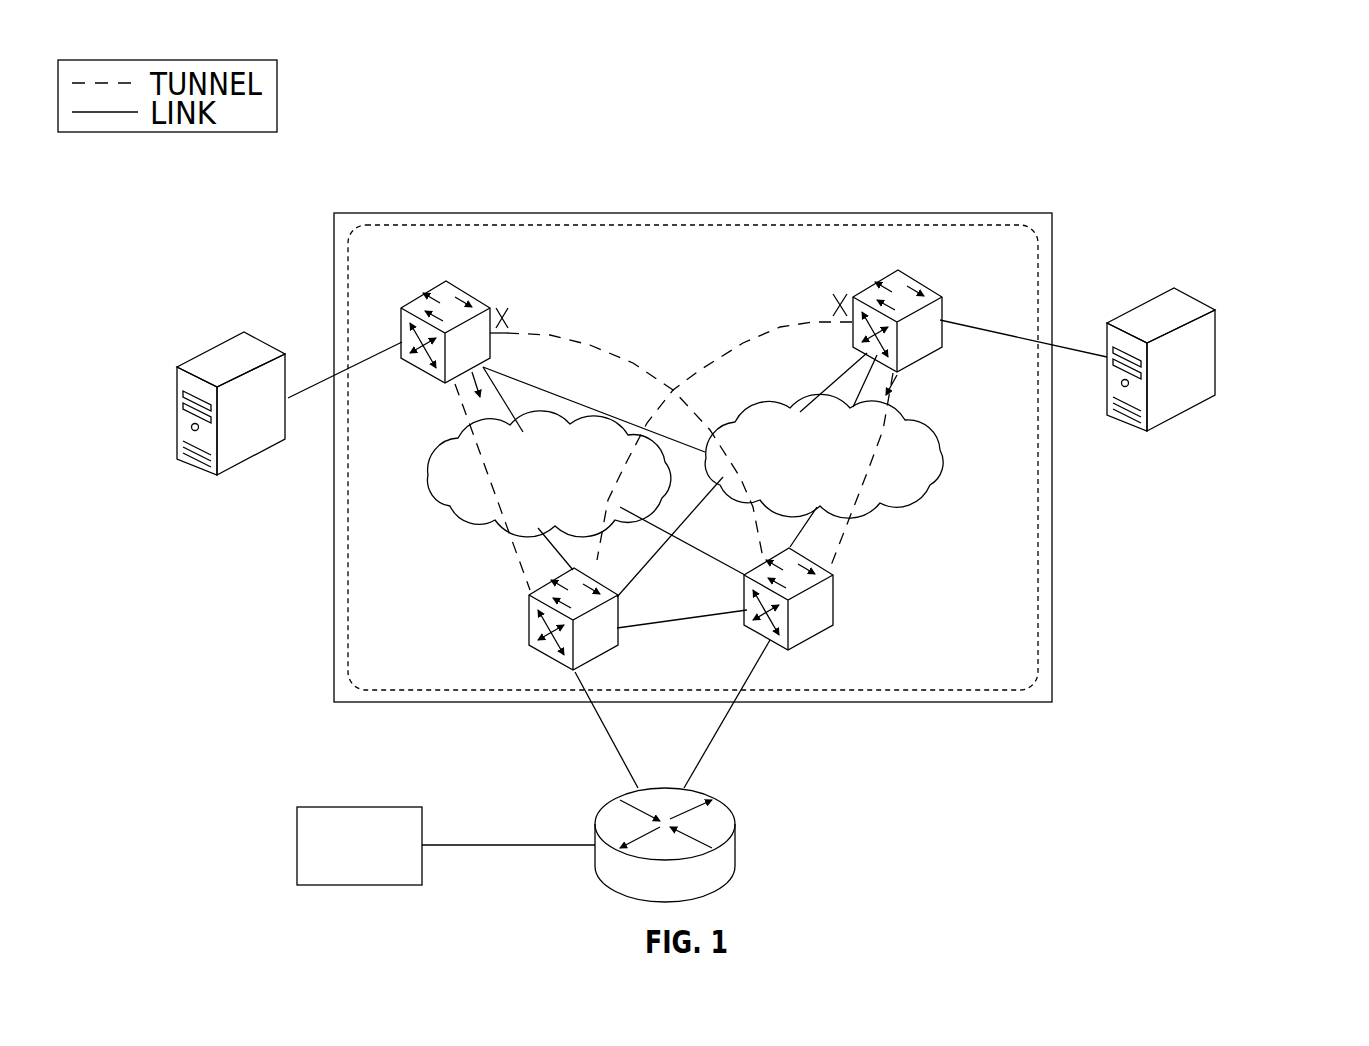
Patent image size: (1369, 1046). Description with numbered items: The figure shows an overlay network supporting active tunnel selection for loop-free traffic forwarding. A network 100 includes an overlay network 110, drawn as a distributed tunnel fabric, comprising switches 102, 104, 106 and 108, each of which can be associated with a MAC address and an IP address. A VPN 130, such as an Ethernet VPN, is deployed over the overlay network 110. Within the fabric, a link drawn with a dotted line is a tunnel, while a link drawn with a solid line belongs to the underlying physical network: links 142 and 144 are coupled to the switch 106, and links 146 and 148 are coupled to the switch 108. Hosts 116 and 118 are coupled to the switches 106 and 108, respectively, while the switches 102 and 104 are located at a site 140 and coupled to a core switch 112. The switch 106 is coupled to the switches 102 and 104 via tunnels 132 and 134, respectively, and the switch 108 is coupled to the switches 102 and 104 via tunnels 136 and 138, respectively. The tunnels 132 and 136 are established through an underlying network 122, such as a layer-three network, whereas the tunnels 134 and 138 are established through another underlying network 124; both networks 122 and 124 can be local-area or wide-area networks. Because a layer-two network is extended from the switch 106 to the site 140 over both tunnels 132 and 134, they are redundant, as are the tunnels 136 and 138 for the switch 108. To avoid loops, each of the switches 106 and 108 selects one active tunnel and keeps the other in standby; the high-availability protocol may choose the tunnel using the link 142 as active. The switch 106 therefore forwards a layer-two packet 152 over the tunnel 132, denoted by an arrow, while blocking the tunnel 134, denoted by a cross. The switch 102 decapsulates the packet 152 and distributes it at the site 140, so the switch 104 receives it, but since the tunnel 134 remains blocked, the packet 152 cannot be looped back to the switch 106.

The network 100 is at (1150, 110).
The switch 102 is at (619, 632).
The switch 104 is at (833, 600).
The switch 106 is at (445, 282).
The switch 108 is at (918, 282).
The overlay network 110 is at (713, 176).
The core switch 112 is at (735, 845).
The host 116 is at (222, 345).
The host 118 is at (1160, 295).
The underlying network 122 is at (450, 505).
The underlying network 124 is at (873, 503).
The VPN 130 is at (1047, 527).
The tunnel 132 is at (475, 432).
The tunnel 134 is at (590, 345).
The tunnel 136 is at (730, 347).
The tunnel 138 is at (903, 387).
The site 140 is at (372, 807).
The link 142 is at (500, 396).
The link 144 is at (530, 382).
The link 146 is at (837, 402).
The link 148 is at (850, 402).
The layer-2 packet 152 is at (478, 374).